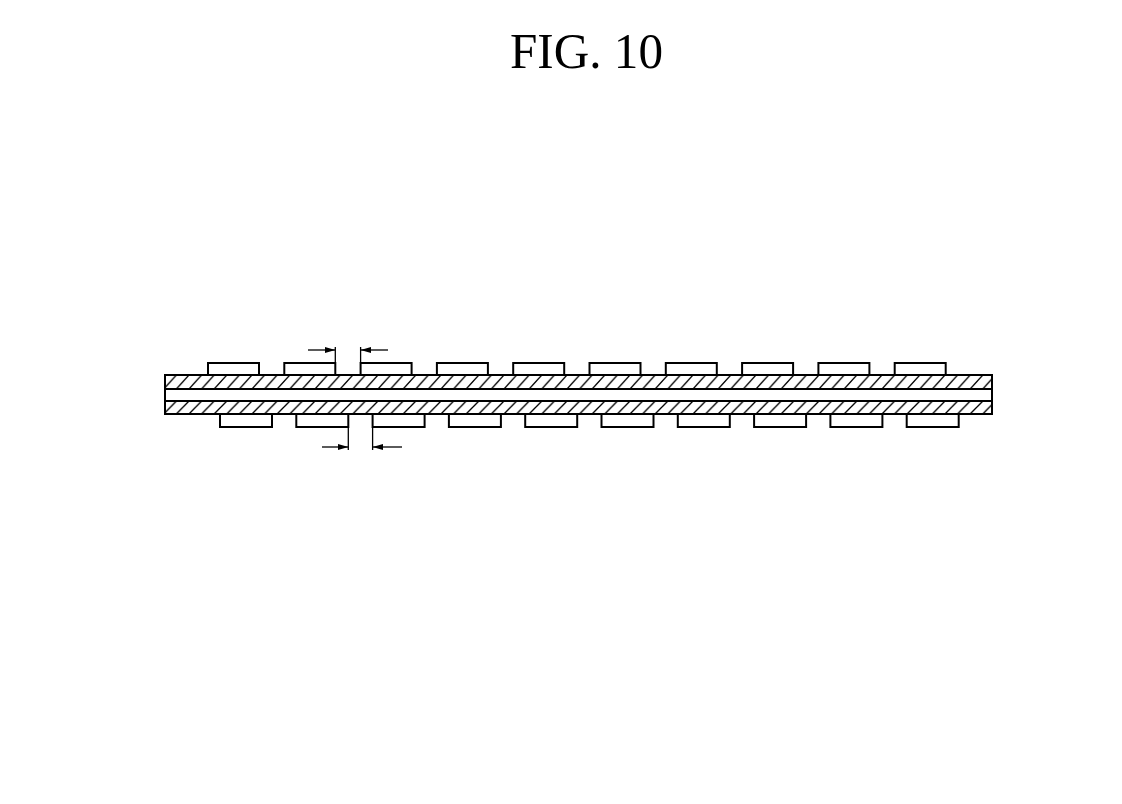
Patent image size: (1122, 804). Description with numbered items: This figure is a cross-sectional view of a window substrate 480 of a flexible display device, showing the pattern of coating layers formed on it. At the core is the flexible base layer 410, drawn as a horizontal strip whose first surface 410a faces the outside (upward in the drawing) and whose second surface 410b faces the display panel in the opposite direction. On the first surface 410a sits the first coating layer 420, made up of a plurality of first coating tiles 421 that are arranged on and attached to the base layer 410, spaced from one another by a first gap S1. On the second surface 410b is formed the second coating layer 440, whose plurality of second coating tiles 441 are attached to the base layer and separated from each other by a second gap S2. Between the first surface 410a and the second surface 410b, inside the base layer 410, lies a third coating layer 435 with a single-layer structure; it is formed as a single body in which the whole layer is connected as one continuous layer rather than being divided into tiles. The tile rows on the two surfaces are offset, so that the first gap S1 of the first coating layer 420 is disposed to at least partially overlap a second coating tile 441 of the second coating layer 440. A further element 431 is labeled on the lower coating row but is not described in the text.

The window substrate 480 is at (1053, 432).
The flexible base layer 410 is at (978, 381).
The first surface 410a is at (172, 375).
The second surface 410b is at (172, 414).
The first coating layer 420 is at (946, 369).
The first coating tile 421 is at (218, 363).
The second electrode 431 is at (253, 397).
The third coating layer 435 is at (978, 394).
The second coating layer 440 is at (957, 424).
The second coating tile 441 is at (425, 423).
The first gap S1 is at (348, 339).
The second gap S2 is at (362, 456).